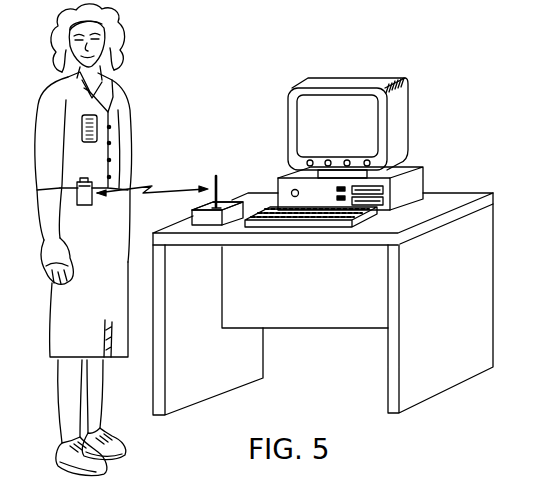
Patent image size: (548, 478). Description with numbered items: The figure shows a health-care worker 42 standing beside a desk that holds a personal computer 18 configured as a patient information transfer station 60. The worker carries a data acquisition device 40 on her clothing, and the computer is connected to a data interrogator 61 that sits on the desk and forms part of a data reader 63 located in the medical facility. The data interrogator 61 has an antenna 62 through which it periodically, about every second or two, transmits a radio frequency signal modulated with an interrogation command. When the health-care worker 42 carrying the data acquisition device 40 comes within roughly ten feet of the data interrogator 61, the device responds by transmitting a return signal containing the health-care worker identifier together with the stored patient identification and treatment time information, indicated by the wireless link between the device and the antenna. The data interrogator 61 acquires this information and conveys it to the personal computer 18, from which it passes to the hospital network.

The health-care worker 42 is at (116, 118).
The data acquisition device 40 is at (90, 201).
The patient information transfer station 60 is at (432, 117).
The personal computer 18 is at (417, 186).
The data interrogator 61 is at (190, 217).
The antenna 62 is at (217, 205).
The data reader 63 is at (231, 191).